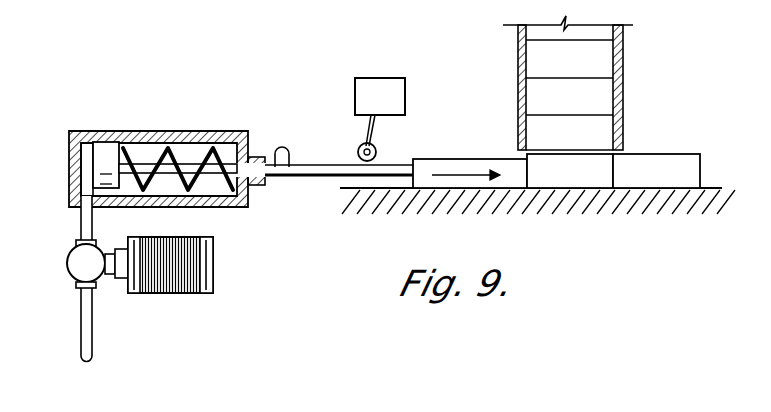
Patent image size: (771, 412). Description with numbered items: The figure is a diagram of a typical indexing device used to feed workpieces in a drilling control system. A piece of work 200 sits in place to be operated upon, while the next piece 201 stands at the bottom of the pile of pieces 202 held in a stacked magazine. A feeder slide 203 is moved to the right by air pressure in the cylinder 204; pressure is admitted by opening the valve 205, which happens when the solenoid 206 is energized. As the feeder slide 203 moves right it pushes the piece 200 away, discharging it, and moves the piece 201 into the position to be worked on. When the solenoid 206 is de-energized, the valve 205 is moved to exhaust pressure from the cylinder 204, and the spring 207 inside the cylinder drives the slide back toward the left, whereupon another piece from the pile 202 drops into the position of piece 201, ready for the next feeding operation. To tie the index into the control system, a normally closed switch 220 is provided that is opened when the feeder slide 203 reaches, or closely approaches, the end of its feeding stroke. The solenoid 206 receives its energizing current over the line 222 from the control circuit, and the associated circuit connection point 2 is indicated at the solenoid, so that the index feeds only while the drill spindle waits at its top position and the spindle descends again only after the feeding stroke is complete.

The circuit connection point 2 is at (202, 293).
The piece of work 200 is at (656, 171).
The next piece 201 is at (570, 171).
The pile of pieces 202 is at (578, 63).
The feeder slide 203 is at (458, 165).
The cylinder 204 is at (140, 131).
The valve 205 is at (77, 260).
The solenoid 206 is at (195, 237).
The spring 207 is at (224, 164).
The switch 220 is at (380, 119).
The line 222 is at (138, 293).